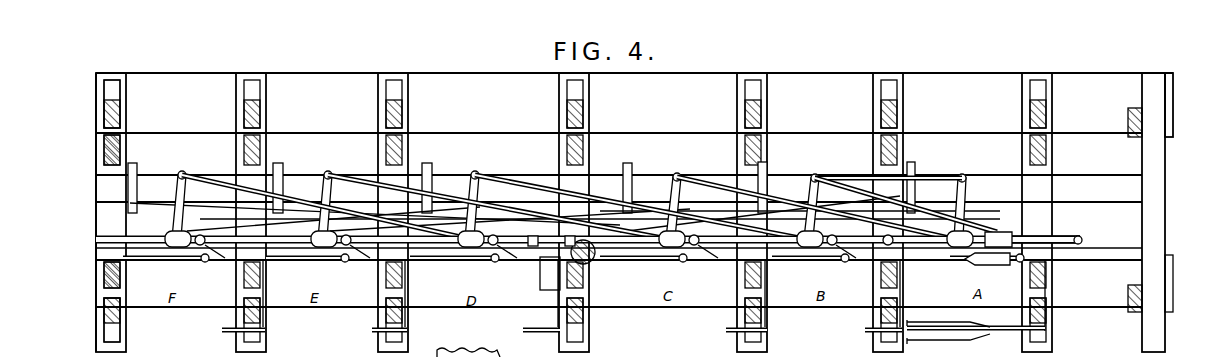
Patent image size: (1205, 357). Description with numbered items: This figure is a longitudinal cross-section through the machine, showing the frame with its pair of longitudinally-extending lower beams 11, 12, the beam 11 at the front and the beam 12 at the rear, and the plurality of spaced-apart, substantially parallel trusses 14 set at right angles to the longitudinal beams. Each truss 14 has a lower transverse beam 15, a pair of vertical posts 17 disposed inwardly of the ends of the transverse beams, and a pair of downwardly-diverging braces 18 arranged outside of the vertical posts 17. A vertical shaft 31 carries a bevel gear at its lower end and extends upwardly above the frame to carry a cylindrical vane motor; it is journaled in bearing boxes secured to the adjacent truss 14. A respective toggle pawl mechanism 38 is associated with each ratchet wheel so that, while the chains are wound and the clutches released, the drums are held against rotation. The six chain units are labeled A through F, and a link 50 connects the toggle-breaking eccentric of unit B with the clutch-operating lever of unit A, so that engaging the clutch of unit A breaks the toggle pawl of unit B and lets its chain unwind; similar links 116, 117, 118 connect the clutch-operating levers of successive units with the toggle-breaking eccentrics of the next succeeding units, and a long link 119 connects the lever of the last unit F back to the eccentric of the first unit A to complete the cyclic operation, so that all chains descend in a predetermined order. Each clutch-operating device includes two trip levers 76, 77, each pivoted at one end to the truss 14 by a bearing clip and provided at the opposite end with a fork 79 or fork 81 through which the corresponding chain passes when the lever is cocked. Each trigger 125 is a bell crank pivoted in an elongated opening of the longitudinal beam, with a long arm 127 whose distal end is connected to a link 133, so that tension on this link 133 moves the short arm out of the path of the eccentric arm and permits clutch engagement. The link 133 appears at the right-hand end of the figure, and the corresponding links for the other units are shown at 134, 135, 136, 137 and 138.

The lower beam 11 is at (203, 305).
The lower beam 12 is at (181, 76).
The truss 14 is at (89, 85).
The lower transverse beam 15 is at (104, 170).
The vertical post 17 is at (104, 147).
The brace 18 is at (104, 112).
The vertical shaft 31 is at (608, 262).
The pawl mechanism 38 is at (614, 171).
The link 50 is at (891, 224).
The trip lever 76 is at (546, 333).
The trip lever 77 is at (172, 266).
The fork 79 is at (928, 323).
The fork 81 is at (966, 263).
The link 116 is at (583, 225).
The link 117 is at (405, 217).
The link 118 is at (262, 218).
The long link 119 is at (550, 225).
The trigger 125 is at (170, 193).
The long arm 127 is at (958, 195).
The link 133 is at (863, 183).
The link 134 is at (718, 182).
The link 135 is at (521, 182).
The link 136 is at (363, 182).
The link 137 is at (219, 182).
The link 138 is at (772, 192).